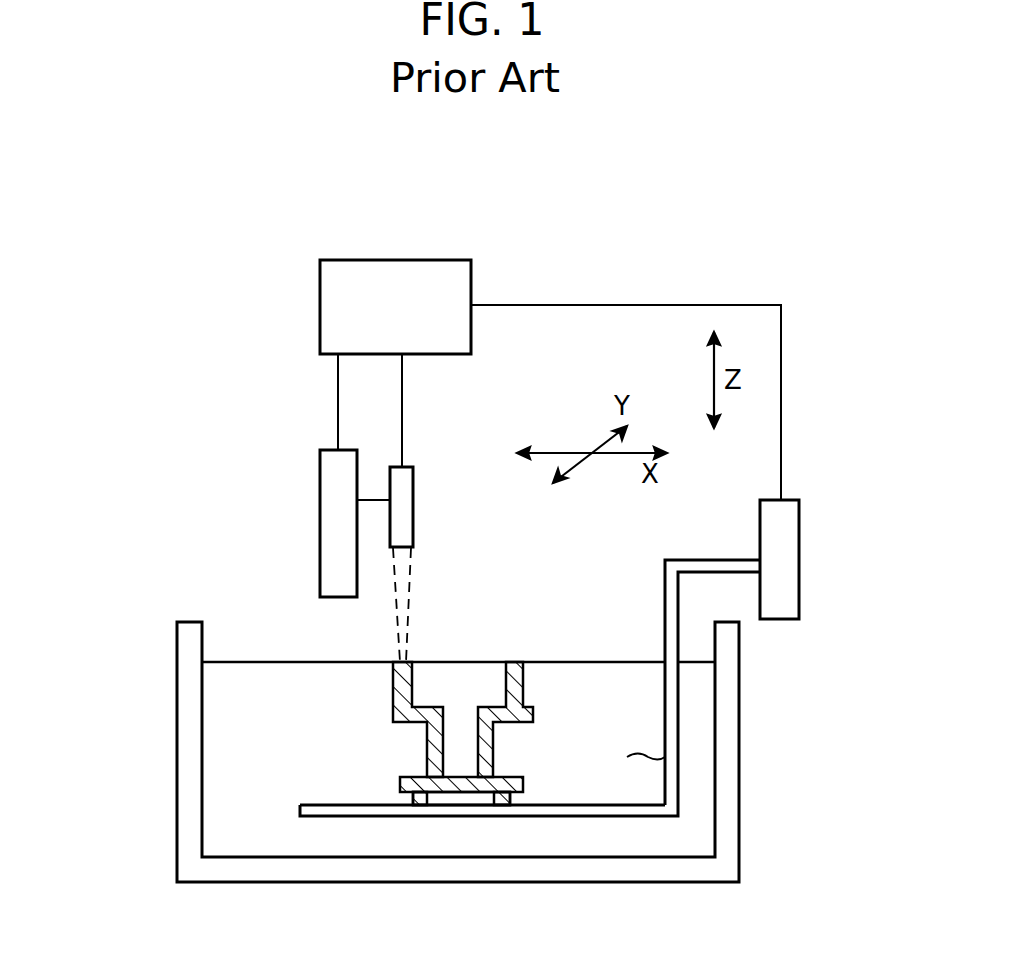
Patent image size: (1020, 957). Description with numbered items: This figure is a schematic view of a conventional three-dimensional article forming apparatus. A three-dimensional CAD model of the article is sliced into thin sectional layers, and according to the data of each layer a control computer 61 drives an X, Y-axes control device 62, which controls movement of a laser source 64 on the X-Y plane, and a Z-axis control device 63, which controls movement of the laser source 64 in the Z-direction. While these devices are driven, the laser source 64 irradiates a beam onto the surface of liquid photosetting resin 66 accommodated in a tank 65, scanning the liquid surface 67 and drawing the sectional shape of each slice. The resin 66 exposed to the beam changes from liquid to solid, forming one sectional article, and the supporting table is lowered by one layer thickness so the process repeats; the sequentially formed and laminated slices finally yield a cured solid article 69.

The control computer 61 is at (389, 258).
The X, Y-axes control device 62 is at (322, 533).
The Z-axis control device 63 is at (799, 567).
The laser source 64 is at (413, 527).
The tank 65 is at (740, 737).
The liquid photosetting resin 66 is at (226, 737).
The liquid resin surface 67 is at (573, 661).
The cured solid article 69 is at (393, 703).